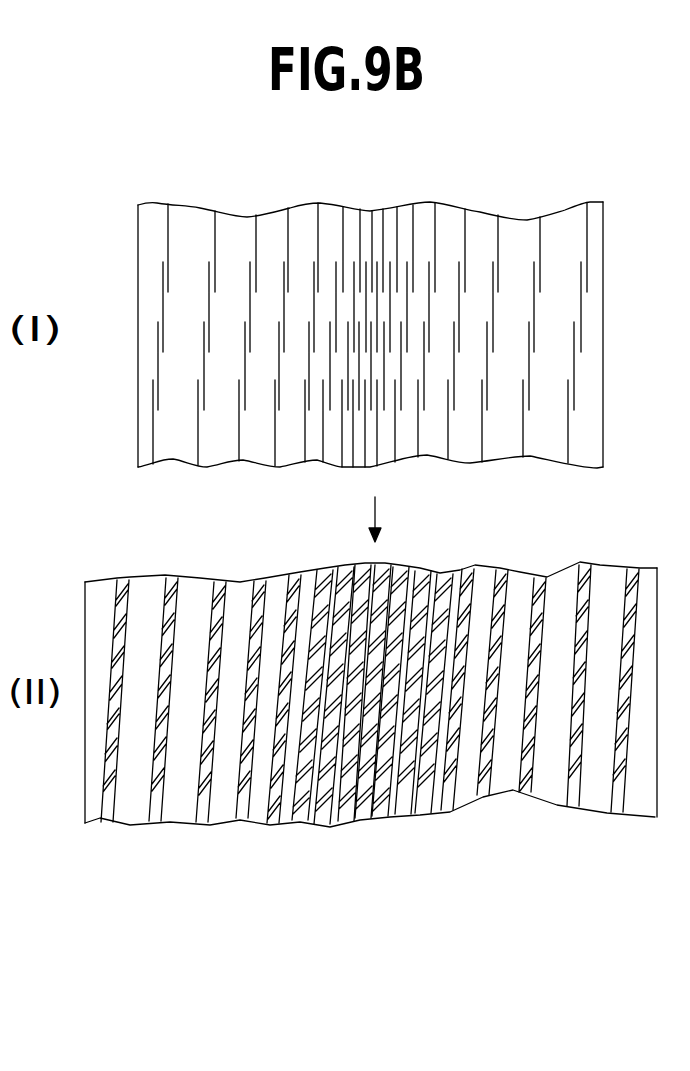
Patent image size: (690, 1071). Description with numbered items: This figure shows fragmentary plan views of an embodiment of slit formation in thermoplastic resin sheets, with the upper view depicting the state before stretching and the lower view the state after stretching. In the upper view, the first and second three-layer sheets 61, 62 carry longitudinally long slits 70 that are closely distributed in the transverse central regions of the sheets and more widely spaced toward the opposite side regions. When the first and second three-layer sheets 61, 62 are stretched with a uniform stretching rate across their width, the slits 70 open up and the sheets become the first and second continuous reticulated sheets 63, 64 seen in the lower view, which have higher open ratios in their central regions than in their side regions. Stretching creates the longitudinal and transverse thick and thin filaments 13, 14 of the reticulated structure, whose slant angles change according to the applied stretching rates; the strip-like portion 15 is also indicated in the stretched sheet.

The first three-layer sheet 61 is at (398, 309).
The second three-layer sheet 62 is at (398, 335).
The slit 70 is at (583, 308).
The first continuous reticulated sheet 63 is at (380, 699).
The second continuous reticulated sheet 64 is at (380, 730).
The thick filament 13 is at (430, 793).
The thin filament 14 is at (407, 793).
The louver strip 15 is at (623, 697).